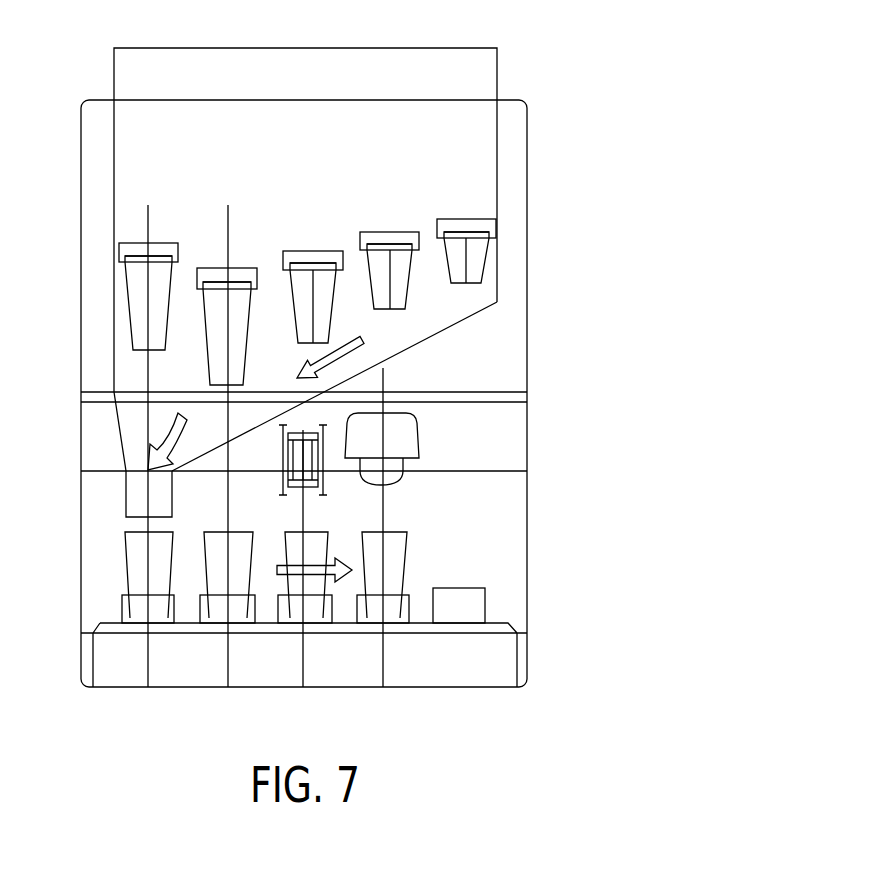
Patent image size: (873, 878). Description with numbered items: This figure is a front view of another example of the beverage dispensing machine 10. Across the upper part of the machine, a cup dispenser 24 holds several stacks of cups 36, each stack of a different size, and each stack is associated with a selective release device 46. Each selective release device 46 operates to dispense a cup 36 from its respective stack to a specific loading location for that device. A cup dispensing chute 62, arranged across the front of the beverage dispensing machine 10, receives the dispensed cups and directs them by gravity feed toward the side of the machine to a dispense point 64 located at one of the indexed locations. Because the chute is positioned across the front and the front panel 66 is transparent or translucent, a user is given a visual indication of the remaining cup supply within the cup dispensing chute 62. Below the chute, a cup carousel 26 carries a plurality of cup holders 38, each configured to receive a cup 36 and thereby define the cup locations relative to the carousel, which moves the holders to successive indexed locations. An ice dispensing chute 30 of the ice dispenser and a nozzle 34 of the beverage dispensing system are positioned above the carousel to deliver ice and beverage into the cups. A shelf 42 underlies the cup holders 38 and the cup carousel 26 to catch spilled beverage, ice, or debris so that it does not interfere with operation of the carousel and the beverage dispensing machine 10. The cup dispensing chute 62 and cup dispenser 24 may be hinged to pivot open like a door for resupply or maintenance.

The beverage dispensing machine 10 is at (317, 372).
The cup dispenser 24 is at (562, 91).
The cup carousel 26 is at (476, 572).
The ice dispensing chute 30 is at (264, 455).
The nozzle 34 is at (406, 486).
The cup 36 is at (137, 296).
The cup holder 38 is at (299, 613).
The shelf 42 is at (500, 622).
The selective release device 46 is at (121, 247).
The cup dispensing chute 62 is at (120, 428).
The dispense point 64 is at (102, 536).
The front panel 66 is at (150, 184).